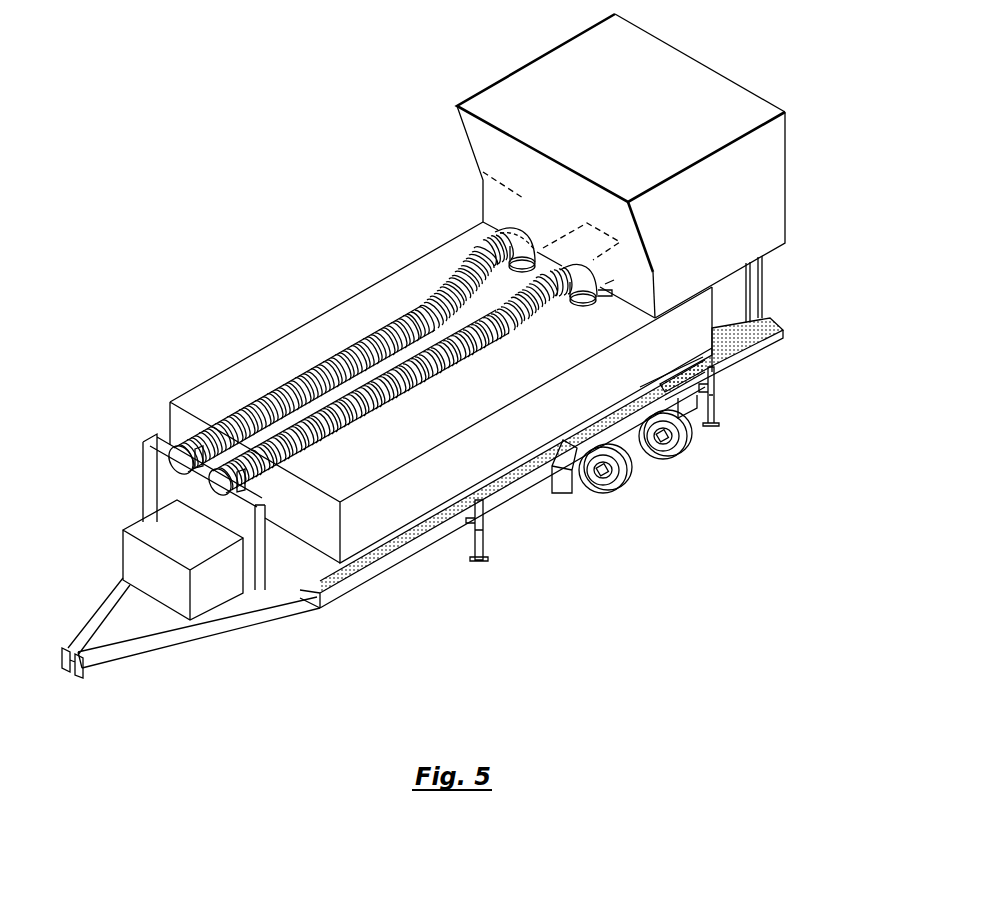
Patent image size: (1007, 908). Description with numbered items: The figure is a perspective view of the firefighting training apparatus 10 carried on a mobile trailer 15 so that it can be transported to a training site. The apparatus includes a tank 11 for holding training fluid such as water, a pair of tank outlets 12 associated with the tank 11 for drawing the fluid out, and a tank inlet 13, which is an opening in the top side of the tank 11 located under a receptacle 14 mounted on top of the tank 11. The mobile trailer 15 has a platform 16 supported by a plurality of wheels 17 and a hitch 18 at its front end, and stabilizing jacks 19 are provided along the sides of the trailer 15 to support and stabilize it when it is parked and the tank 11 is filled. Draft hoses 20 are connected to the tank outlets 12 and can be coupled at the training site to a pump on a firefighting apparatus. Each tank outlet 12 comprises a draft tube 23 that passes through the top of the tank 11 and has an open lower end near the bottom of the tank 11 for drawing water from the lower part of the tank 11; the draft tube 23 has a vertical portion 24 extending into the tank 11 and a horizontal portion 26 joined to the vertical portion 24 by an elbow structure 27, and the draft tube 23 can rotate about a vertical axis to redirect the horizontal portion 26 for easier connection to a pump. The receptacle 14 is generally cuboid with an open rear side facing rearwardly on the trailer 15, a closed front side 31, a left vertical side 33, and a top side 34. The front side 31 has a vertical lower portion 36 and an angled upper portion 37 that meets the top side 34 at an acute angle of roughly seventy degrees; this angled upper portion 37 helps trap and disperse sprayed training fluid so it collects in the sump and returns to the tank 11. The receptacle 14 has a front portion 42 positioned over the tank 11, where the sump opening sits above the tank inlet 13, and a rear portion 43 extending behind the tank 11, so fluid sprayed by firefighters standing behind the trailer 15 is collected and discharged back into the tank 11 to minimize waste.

The firefighting training apparatus 10 is at (449, 346).
The tank 11 is at (217, 381).
The tank outlet 12 is at (460, 210).
The tank inlet 13 is at (480, 167).
The receptacle 14 is at (625, 166).
The mobile trailer 15 is at (400, 557).
The platform 16 is at (332, 587).
The wheels 17 is at (668, 448).
The hitch 18 is at (100, 605).
The stabilizing jacks 19 is at (490, 540).
The draft hoses 20 is at (333, 357).
The draft tube 23 is at (576, 300).
The vertical portion 24 is at (608, 296).
The horizontal portion 26 is at (593, 325).
The elbow structure 27 is at (510, 226).
The front side 31 is at (541, 178).
The left vertical side 33 is at (768, 190).
The top side 34 is at (540, 80).
The vertical lower portion 36 is at (560, 245).
The angled upper portion 37 is at (482, 133).
The front portion 42 is at (740, 357).
The rear portion 43 is at (725, 262).